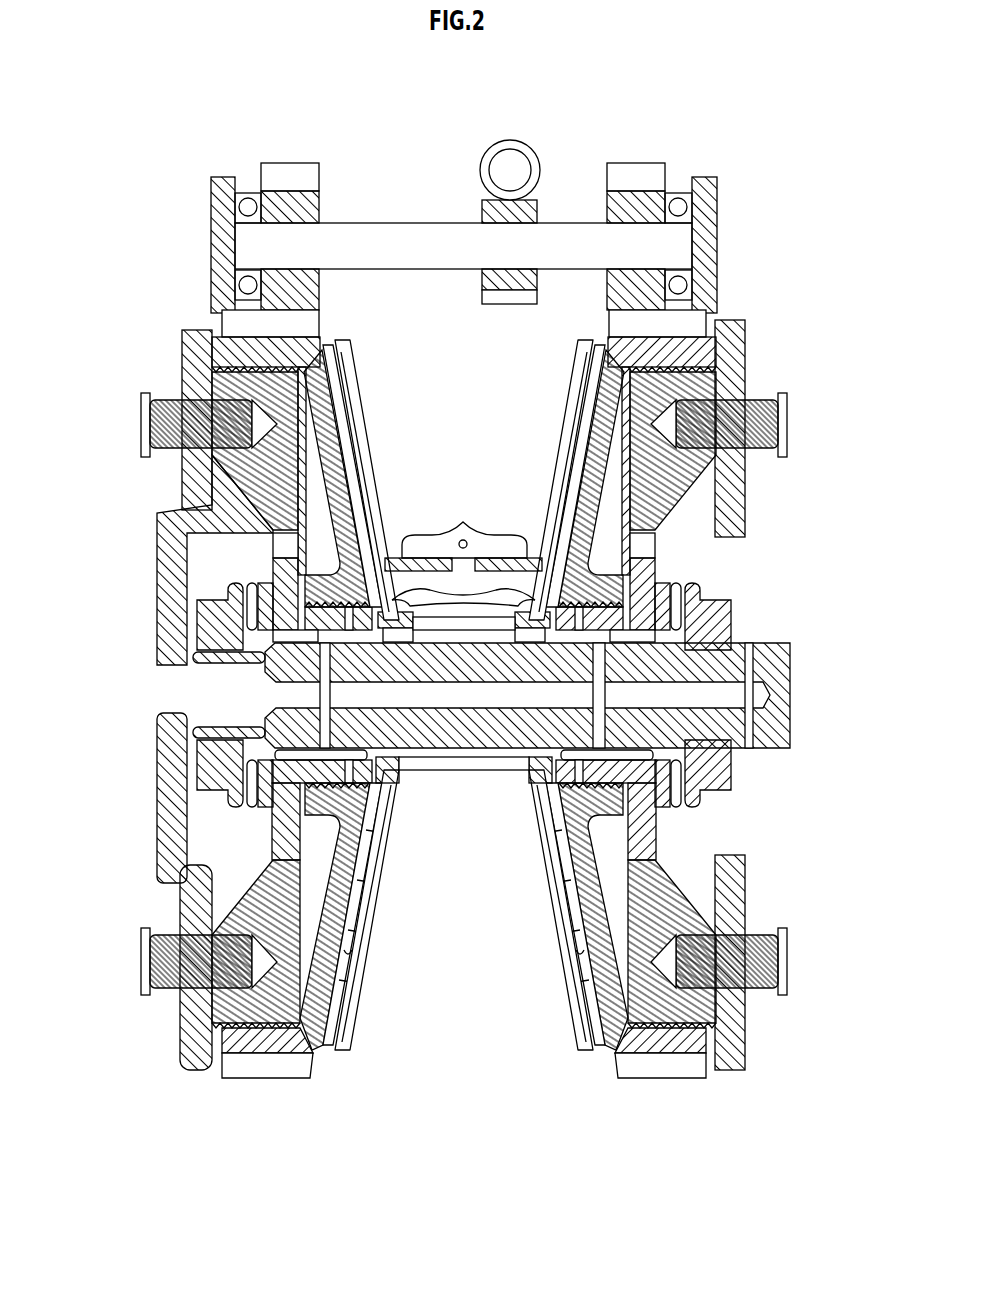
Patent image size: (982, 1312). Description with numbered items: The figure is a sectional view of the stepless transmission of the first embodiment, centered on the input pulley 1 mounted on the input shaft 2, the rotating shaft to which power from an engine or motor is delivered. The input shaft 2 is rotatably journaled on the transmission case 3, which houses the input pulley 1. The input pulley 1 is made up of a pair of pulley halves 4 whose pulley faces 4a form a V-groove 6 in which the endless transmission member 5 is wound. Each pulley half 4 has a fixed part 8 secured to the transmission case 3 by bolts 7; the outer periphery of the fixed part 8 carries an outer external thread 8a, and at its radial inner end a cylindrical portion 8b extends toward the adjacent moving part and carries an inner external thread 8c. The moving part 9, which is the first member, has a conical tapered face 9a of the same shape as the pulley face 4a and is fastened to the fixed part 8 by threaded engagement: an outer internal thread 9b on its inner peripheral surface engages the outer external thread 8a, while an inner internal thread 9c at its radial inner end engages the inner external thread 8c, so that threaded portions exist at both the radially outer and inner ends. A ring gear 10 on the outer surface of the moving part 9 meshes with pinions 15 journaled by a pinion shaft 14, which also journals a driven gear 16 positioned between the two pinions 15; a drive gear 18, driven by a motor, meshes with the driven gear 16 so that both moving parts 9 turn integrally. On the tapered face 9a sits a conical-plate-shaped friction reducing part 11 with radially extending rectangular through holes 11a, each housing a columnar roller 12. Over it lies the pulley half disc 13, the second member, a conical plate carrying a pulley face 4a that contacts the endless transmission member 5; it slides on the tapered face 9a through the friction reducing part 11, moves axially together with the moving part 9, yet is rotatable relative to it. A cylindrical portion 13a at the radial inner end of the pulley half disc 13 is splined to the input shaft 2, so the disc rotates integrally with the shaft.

The input pulley 1 is at (700, 160).
The input shaft 2 is at (778, 640).
The transmission case 3 is at (182, 360).
The pulley halves 4 is at (265, 1115).
The pulley face 4a is at (360, 470).
The endless transmission member 5 is at (463, 520).
The V-groove 6 is at (455, 405).
The bolts 7 is at (150, 435).
The fixed part 8 is at (185, 505).
The outer external thread 8a is at (278, 1055).
The cylindrical portion 8b is at (205, 665).
The inner external thread 8c is at (355, 780).
The moving part 9 is at (598, 350).
The tapered face 9a is at (345, 880).
The outer internal thread 9b is at (212, 390).
The inner internal thread 9c is at (728, 775).
The ring gear 10 is at (245, 325).
The friction reducing part 11 is at (355, 920).
The through holes 11a is at (358, 968).
The roller 12 is at (577, 950).
The pulley half disc 13 is at (375, 820).
The cylindrical portion 13a is at (512, 775).
The pinion shaft 14 is at (387, 222).
The pinions 15 is at (290, 163).
The driven gear 16 is at (482, 195).
The drive gear 18 is at (535, 145).